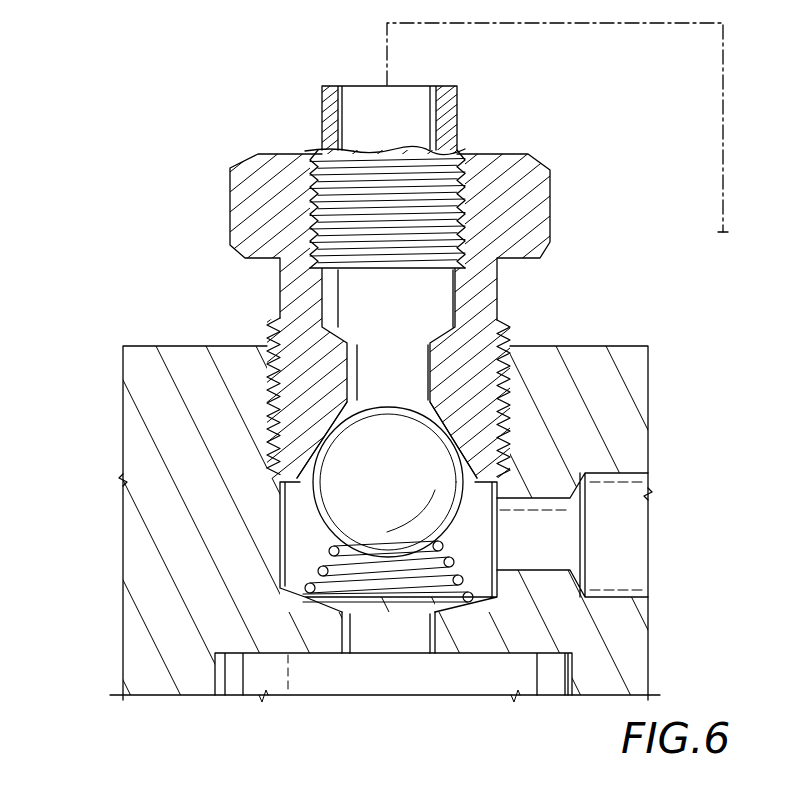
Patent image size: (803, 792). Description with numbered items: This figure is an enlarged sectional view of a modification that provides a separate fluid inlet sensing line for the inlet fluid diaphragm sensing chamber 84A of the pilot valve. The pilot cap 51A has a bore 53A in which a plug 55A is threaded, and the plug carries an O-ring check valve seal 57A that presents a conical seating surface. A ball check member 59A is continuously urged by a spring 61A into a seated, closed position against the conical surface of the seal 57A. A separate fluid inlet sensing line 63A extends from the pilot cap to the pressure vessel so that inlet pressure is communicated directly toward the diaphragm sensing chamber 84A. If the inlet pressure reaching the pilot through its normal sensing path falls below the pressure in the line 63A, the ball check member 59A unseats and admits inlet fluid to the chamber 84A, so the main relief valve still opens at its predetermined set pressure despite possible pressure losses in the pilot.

The pilot cap 51A is at (633, 398).
The bore 53A is at (485, 538).
The plug 55A is at (478, 310).
The O-ring check valve seal 57A is at (470, 437).
The ball check member 59A is at (333, 487).
The spring 61A is at (305, 590).
The fluid inlet sensing line 63A is at (723, 135).
The inlet fluid diaphragm sensing chamber 84A is at (393, 688).